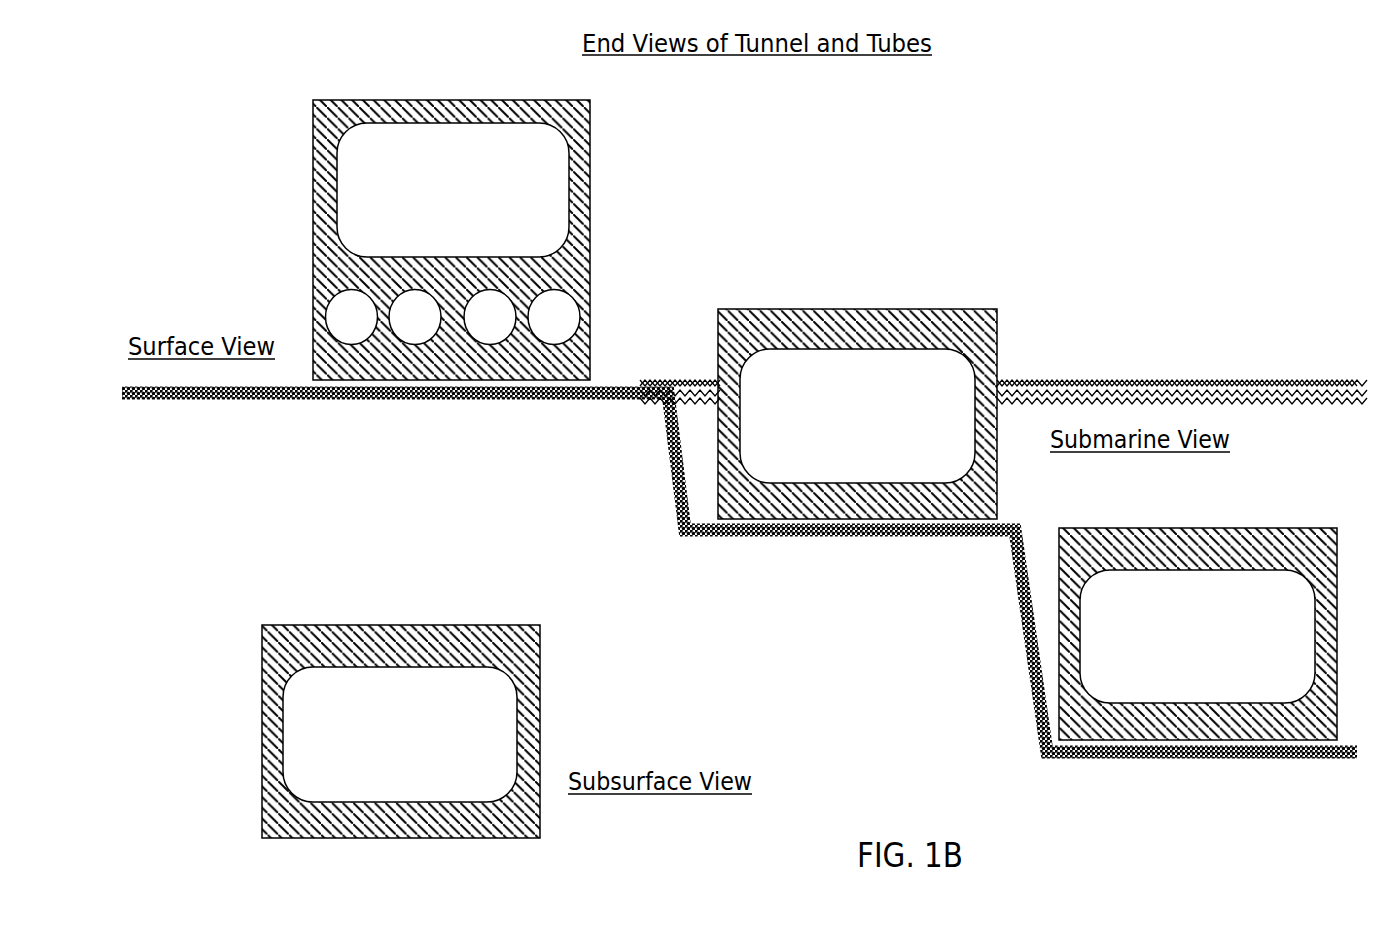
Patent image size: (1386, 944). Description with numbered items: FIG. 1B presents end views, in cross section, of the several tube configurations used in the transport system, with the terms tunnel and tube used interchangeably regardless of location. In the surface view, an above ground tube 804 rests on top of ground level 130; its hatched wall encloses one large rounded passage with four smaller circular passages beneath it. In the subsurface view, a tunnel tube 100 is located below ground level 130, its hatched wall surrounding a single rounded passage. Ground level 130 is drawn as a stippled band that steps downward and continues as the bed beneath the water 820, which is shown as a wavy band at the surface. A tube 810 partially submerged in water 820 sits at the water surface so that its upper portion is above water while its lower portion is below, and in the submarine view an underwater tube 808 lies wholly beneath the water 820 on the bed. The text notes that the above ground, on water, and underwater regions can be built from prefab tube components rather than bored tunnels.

The above ground tube 804 is at (312, 226).
The tube partially submerged in water 810 is at (902, 299).
The underwater tube 808 is at (1164, 519).
The tunnel tube 100 is at (376, 613).
The ground level 130 is at (187, 404).
The water 820 is at (1069, 367).